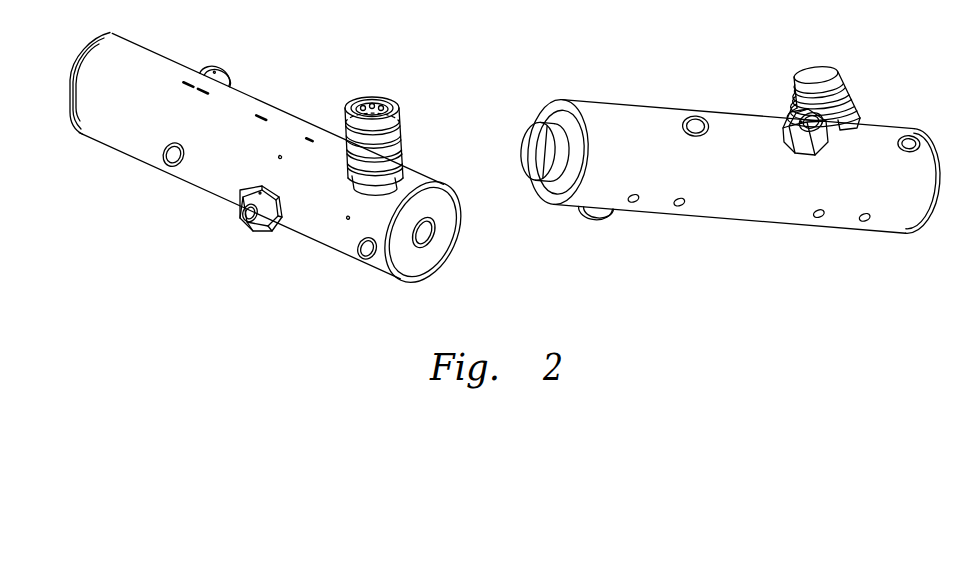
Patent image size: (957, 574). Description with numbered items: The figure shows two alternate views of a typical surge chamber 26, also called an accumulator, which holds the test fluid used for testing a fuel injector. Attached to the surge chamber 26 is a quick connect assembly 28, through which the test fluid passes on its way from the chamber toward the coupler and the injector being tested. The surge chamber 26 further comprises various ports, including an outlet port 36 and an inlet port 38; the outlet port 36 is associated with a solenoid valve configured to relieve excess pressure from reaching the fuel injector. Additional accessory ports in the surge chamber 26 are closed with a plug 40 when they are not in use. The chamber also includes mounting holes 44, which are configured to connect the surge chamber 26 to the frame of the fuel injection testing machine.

The surge chamber 26 is at (280, 108).
The quick connect assembly 28 is at (392, 106).
The outlet port 36 is at (253, 232).
The inlet port 38 is at (222, 67).
The plug 40 is at (527, 145).
The mounting holes 44 is at (633, 200).